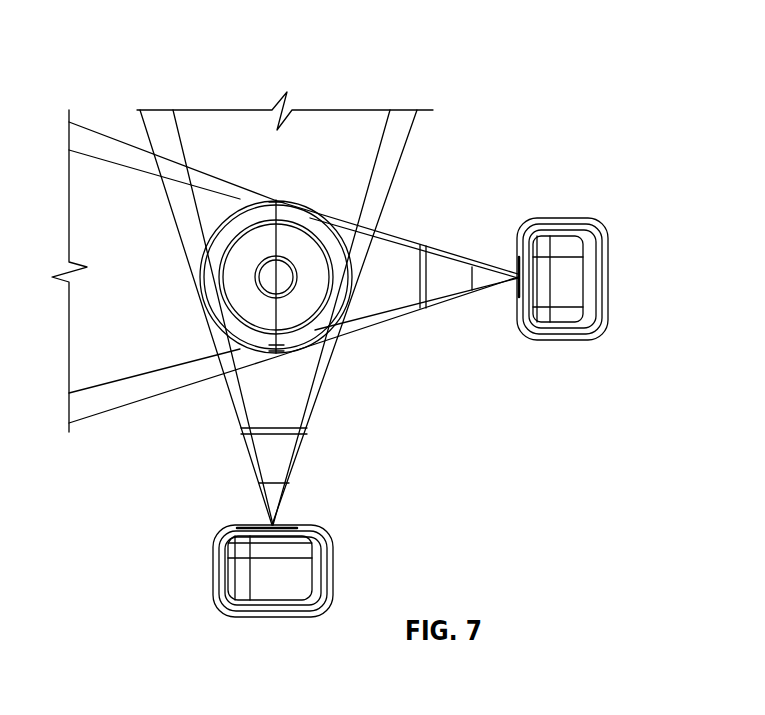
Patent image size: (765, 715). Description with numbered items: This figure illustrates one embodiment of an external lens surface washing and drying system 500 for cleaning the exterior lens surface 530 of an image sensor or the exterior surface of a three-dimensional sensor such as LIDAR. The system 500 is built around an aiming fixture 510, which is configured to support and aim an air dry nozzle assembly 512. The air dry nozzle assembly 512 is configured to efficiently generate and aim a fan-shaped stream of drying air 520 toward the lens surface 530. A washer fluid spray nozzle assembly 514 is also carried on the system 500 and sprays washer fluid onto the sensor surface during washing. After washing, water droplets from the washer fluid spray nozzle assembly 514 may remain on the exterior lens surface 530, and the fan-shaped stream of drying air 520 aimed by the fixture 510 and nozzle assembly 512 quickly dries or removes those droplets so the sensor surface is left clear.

The external lens surface washing and drying system 500 is at (212, 96).
The aiming fixture 510 is at (452, 386).
The air dry nozzle assembly 512 is at (250, 562).
The washer fluid spray nozzle assembly 514 is at (570, 246).
The fan-shaped stream of drying air 520 is at (262, 443).
The sensor exterior lens surface 530 is at (266, 280).